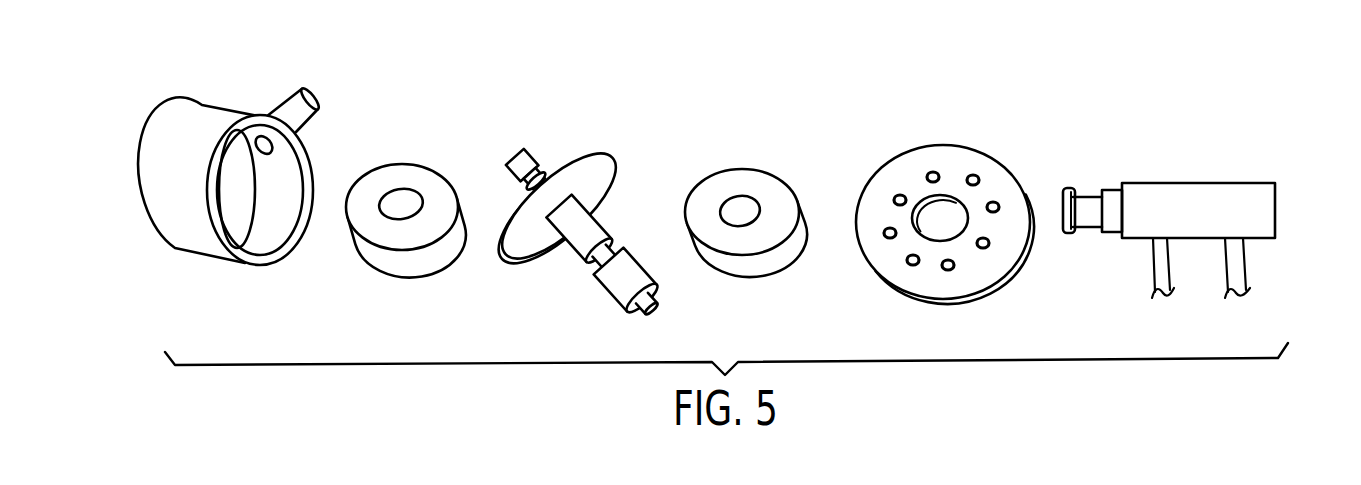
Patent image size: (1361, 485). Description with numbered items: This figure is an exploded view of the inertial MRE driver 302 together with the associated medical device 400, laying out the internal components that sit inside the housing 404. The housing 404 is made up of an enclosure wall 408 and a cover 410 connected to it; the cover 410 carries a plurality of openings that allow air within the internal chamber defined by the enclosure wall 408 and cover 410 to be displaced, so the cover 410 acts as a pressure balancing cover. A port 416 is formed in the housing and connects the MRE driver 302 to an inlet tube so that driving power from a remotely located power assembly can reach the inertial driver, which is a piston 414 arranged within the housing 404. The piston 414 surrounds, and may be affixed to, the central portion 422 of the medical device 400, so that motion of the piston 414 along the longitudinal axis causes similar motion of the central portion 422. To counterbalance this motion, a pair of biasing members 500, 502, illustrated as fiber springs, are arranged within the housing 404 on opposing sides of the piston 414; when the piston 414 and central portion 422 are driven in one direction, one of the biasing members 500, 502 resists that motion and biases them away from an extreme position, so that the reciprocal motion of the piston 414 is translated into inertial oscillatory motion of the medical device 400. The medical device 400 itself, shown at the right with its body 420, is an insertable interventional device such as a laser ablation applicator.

The MRE driver 302 is at (116, 165).
The medical device 400 is at (1298, 207).
The housing 404 is at (913, 87).
The enclosure wall 408 is at (213, 258).
The cover 410 is at (943, 143).
The piston 414 is at (593, 159).
The port 416 is at (318, 92).
The sensor body 420 is at (1163, 183).
The central portion 422 is at (618, 288).
The biasing member 500 is at (403, 283).
The biasing member 502 is at (735, 168).